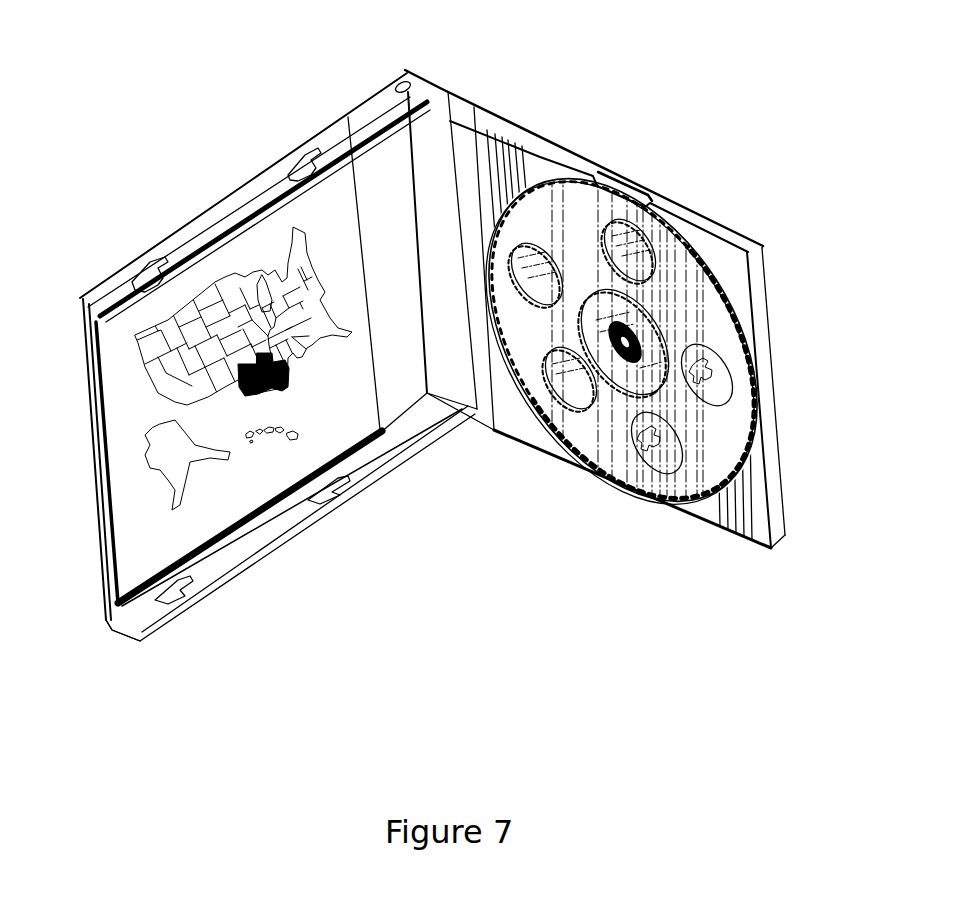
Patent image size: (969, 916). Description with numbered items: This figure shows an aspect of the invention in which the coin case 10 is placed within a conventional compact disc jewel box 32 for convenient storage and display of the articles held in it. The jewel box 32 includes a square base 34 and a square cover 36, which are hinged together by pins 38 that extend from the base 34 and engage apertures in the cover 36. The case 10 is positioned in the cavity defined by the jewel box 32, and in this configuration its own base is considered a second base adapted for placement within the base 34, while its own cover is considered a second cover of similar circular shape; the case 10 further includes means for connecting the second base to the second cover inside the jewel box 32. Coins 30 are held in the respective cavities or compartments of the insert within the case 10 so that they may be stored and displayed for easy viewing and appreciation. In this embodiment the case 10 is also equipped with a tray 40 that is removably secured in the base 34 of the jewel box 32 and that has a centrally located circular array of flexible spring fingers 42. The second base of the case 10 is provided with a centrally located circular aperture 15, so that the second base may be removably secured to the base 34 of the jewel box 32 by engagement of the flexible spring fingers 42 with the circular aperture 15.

The case 10 is at (637, 324).
The circular aperture 15 is at (495, 427).
The coins 30 is at (720, 410).
The compact disc jewel box 32 is at (160, 222).
The base 34 is at (680, 217).
The cover 36 is at (127, 617).
The pins 38 is at (406, 72).
The tray 40 is at (718, 282).
The flexible spring fingers 42 is at (633, 334).